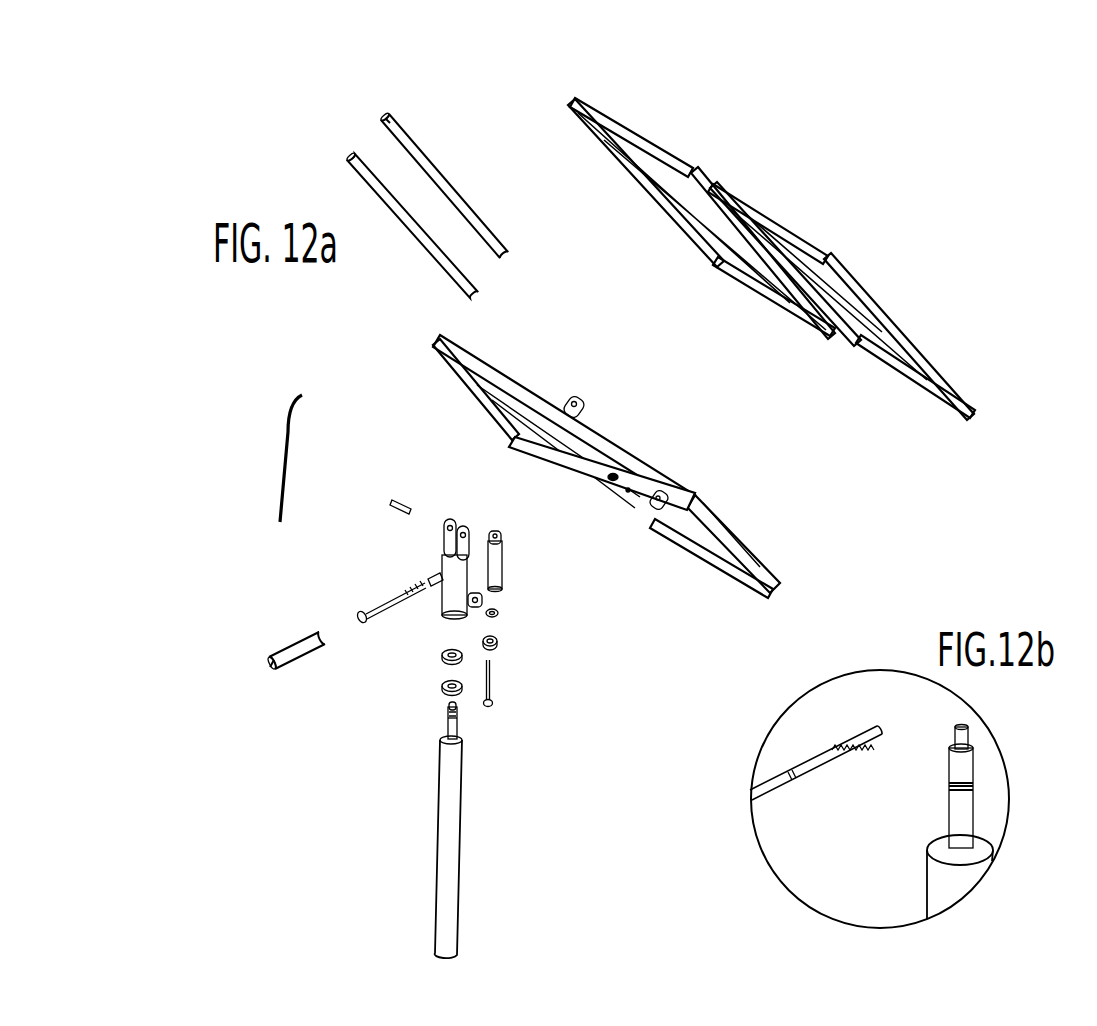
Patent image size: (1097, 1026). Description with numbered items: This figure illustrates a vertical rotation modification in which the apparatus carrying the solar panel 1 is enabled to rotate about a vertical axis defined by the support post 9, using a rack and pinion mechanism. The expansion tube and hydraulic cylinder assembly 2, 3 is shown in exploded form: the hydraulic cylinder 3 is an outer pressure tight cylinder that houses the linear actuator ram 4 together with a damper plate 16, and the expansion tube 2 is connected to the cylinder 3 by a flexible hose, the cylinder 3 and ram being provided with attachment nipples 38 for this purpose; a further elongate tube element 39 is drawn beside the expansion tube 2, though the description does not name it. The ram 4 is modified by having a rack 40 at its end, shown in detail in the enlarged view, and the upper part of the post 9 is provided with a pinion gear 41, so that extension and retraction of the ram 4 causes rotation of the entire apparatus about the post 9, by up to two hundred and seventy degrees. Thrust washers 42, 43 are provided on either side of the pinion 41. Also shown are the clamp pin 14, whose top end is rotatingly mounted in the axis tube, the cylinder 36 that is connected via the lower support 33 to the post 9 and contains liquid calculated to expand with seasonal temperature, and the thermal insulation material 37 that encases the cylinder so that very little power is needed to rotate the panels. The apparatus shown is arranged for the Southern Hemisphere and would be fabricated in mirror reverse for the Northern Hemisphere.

In FIG. 12A, the solar panel 1 is at (638, 125).
In FIG. 12A, the expansion tube 2 is at (373, 113).
In FIG. 12A, the hydraulic cylinder 3 is at (291, 642).
In FIG. 12A, the linear actuator ram 4 is at (387, 590).
In FIG. 12A, the support post 9 is at (462, 823).
In FIG. 12A, the clamp pin 14 is at (750, 543).
In FIG. 12A, the damper plate 16 is at (355, 607).
In FIG. 12A, the lower support 33 is at (495, 598).
In FIG. 12A, the cylinder 36 is at (517, 560).
In FIG. 12A, the thermal insulation material 37 is at (273, 472).
In FIG. 12A, the attachment nipples 38 is at (382, 135).
In FIG. 12A, the pole 39 is at (430, 263).
In FIG. 12A, the rack 40 is at (417, 597).
In FIG. 12B, the rack 40 is at (858, 755).
In FIG. 12A, the pinion gear 41 is at (463, 723).
In FIG. 12B, the pinion gear 41 is at (947, 802).
In FIG. 12A, the thrust washer 42 is at (442, 710).
In FIG. 12A, the thrust washer 43 is at (443, 660).